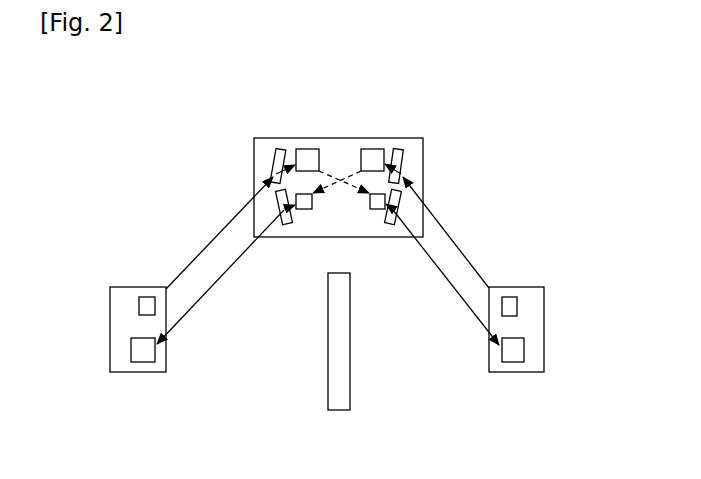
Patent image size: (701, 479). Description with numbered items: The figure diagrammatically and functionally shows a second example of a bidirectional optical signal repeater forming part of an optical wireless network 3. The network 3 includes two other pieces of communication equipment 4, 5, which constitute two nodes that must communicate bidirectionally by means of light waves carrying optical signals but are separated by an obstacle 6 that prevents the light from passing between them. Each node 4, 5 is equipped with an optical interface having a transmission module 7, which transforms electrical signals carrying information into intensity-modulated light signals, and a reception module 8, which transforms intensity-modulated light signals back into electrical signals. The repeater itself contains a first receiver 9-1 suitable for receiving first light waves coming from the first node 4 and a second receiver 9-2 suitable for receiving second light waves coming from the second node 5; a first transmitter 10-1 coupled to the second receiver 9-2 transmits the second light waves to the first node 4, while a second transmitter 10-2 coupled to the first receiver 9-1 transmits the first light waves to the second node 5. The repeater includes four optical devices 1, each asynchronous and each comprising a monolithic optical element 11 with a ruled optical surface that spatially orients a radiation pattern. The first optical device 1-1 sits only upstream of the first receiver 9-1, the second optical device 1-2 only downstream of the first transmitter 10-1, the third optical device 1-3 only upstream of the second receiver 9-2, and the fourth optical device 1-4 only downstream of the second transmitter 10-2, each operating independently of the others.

The optical device 1 is at (330, 137).
The first optical device 1-1 is at (278, 150).
The second optical device 1-2 is at (284, 225).
The third optical device 1-3 is at (398, 152).
The fourth optical device 1-4 is at (392, 225).
The optical wireless network 3 is at (545, 193).
The first piece of communication equipment 4 is at (140, 373).
The second piece of communication equipment 5 is at (518, 372).
The obstacle 6 is at (338, 411).
The transmission module 7 is at (138, 303).
The reception module 8 is at (131, 348).
The first receiver 9-1 is at (307, 148).
The second receiver 9-2 is at (370, 148).
The first transmitter 10-1 is at (302, 210).
The second transmitter 10-2 is at (377, 210).
The monolithic optical element 11 is at (335, 230).